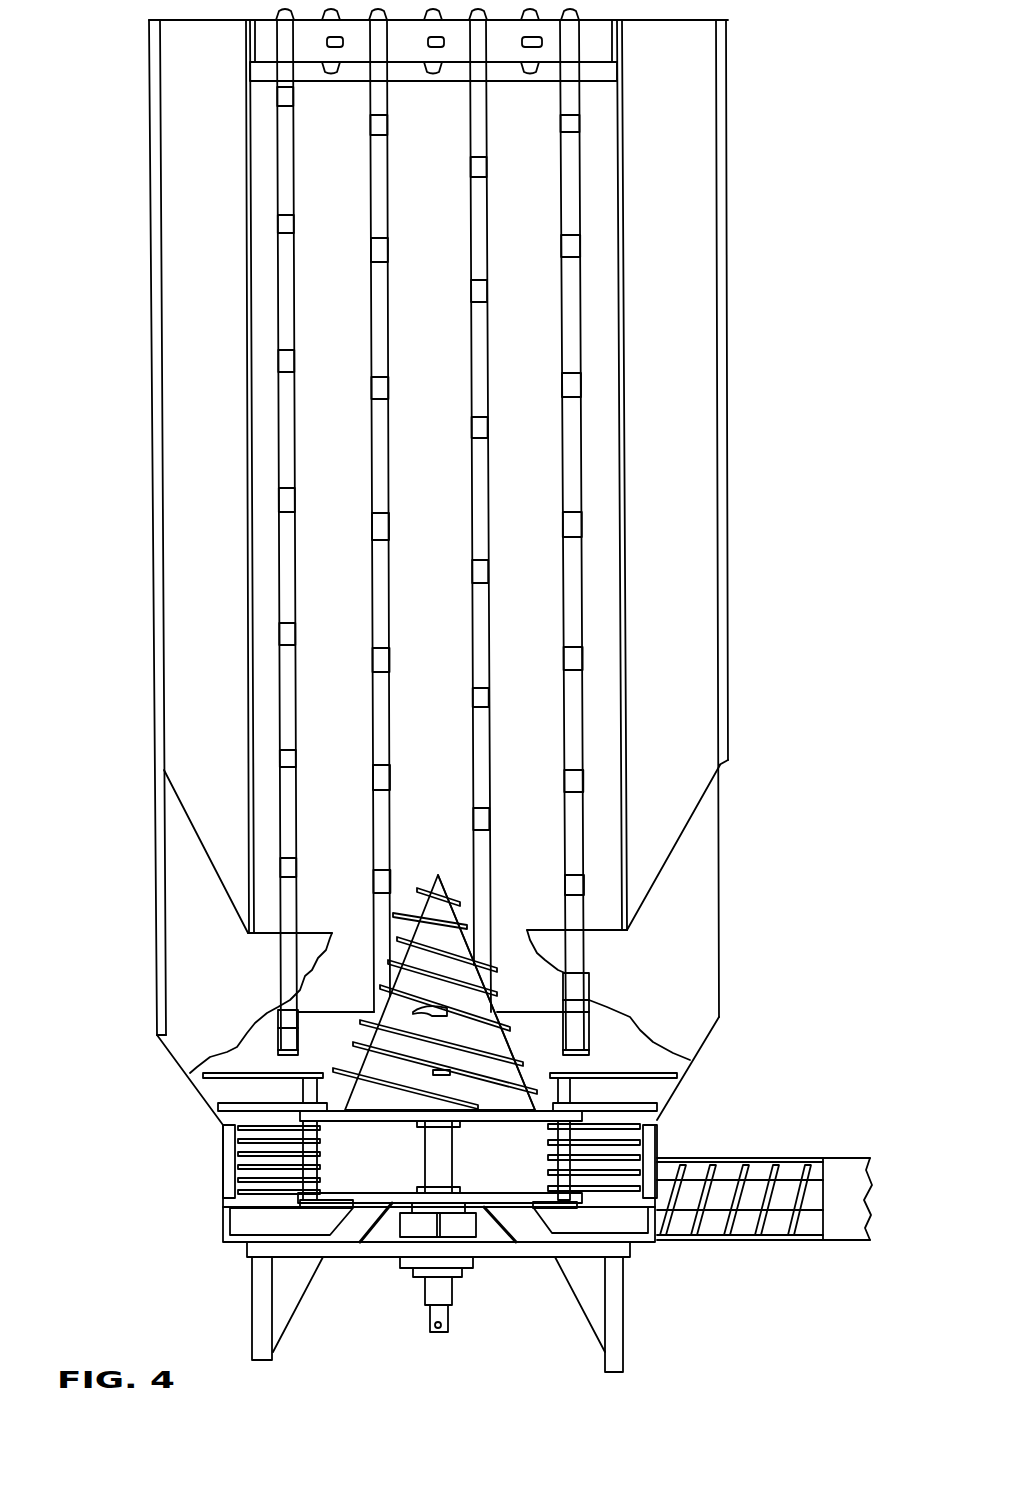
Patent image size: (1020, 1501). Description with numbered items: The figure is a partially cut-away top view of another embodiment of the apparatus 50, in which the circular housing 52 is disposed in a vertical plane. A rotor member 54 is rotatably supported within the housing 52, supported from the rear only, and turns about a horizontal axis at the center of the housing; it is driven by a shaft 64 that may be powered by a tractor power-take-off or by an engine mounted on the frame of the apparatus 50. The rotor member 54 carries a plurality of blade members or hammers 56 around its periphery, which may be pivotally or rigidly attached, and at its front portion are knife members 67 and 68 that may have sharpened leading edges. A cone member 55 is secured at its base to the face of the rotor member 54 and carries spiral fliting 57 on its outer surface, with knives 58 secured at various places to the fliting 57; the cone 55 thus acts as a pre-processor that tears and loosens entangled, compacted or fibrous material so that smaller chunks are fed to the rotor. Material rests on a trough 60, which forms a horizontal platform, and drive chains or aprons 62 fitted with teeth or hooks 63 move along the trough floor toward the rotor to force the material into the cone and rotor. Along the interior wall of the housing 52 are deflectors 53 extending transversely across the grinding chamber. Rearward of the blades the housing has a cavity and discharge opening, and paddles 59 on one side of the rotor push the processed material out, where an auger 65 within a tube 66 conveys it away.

The apparatus 50 is at (138, 1030).
The circular housing 52 is at (212, 1214).
The deflectors 53 is at (228, 1150).
The rotor member 54 is at (384, 1215).
The cone member 55 is at (475, 938).
The blade members or hammers 56 is at (320, 1145).
The spiral fliting 57 is at (482, 983).
The knives 58 is at (400, 913).
The paddles 59 is at (240, 1230).
The trough 60 is at (600, 503).
The drive chains or aprons 62 is at (570, 588).
The teeth or hooks 63 is at (480, 697).
The shaft 64 is at (450, 1322).
The auger 65 is at (748, 1168).
The tube 66 is at (800, 1240).
The knife member 67 is at (217, 1075).
The knife member 68 is at (230, 1105).